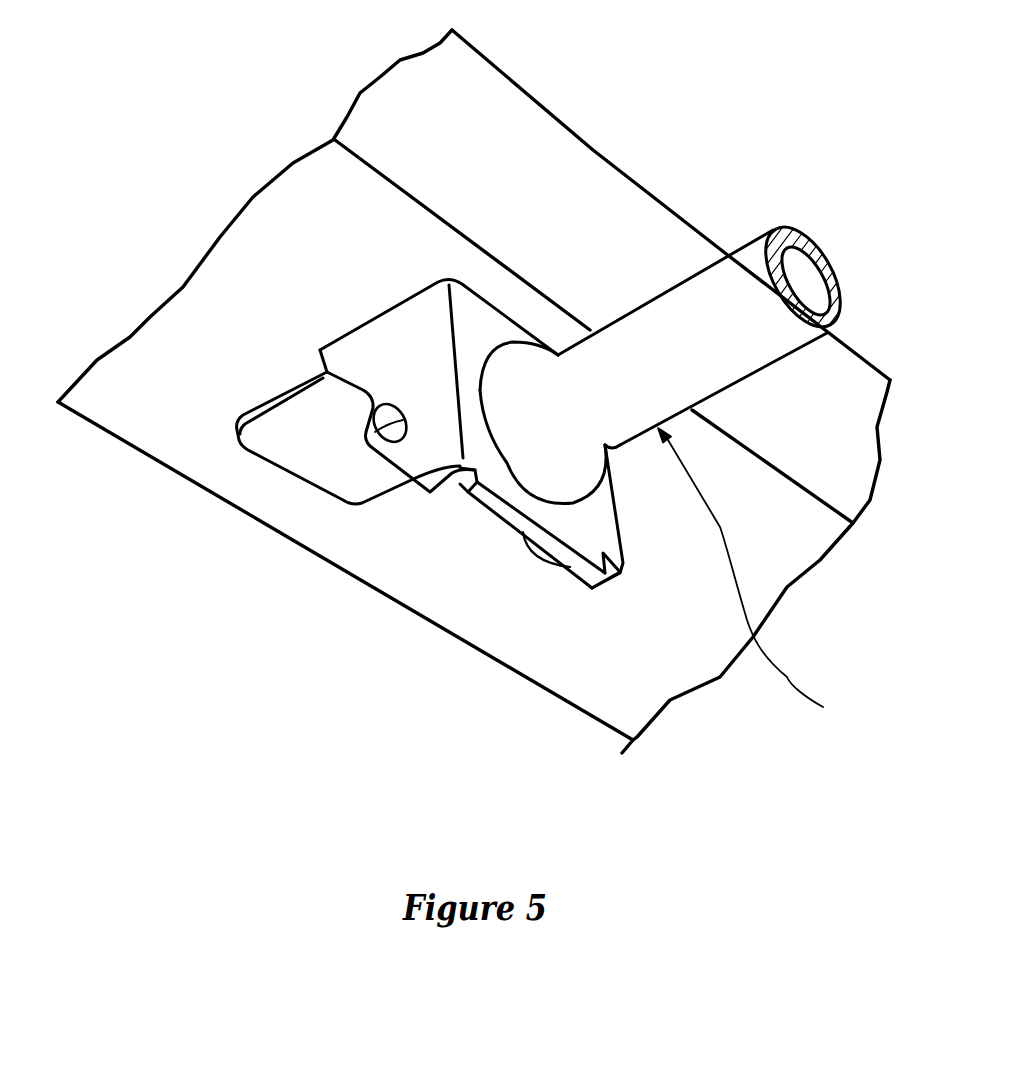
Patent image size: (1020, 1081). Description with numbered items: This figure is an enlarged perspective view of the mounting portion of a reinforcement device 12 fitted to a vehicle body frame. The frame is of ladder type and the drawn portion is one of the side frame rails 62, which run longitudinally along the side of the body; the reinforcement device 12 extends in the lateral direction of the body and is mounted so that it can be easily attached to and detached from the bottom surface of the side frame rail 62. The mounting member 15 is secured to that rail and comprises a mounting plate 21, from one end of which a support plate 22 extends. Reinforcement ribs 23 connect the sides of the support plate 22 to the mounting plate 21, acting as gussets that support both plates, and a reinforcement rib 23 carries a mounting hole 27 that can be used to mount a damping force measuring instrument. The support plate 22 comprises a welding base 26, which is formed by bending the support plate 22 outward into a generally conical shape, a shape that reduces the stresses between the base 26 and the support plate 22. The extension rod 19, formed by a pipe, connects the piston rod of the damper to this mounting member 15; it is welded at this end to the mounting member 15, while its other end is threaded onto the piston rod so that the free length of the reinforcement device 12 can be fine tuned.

The side frame rail 62 is at (590, 200).
The extension rod 19 is at (738, 282).
The reinforcement device 12 is at (762, 577).
The mounting member 15 is at (300, 475).
The mounting plate 21 is at (277, 438).
The mounting hole 27 is at (367, 440).
The reinforcement rib 23 is at (407, 453).
The support plate 22 is at (507, 483).
The welding base 26 is at (557, 465).